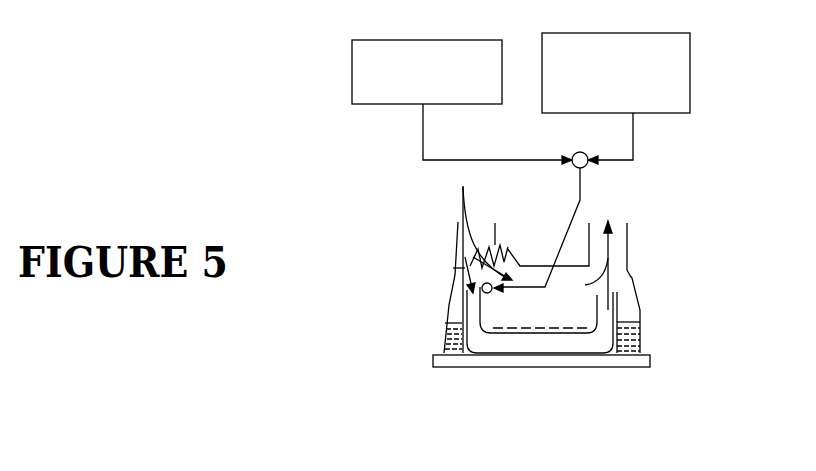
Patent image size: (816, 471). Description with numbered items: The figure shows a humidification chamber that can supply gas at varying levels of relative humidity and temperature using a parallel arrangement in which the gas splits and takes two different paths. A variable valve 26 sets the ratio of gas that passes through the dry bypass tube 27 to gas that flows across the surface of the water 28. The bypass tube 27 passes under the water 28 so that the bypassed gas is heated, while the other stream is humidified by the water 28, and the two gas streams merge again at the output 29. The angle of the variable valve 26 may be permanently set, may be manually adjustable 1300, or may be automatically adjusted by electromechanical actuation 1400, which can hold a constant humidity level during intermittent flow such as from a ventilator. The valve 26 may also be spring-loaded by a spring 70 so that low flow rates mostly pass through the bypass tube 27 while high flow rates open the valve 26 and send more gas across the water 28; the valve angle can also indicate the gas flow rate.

The manual adjustment 1300 is at (351, 84).
The electromechanical actuation 1400 is at (644, 34).
The variable valve 26 is at (452, 273).
The dry bypass tube 27 is at (607, 328).
The water 28 is at (640, 322).
The output 29 is at (618, 227).
The spring 70 is at (507, 247).